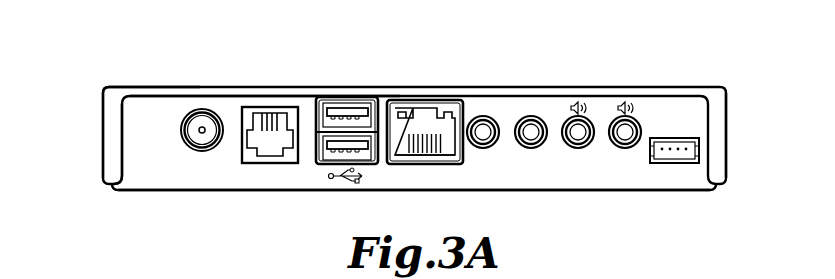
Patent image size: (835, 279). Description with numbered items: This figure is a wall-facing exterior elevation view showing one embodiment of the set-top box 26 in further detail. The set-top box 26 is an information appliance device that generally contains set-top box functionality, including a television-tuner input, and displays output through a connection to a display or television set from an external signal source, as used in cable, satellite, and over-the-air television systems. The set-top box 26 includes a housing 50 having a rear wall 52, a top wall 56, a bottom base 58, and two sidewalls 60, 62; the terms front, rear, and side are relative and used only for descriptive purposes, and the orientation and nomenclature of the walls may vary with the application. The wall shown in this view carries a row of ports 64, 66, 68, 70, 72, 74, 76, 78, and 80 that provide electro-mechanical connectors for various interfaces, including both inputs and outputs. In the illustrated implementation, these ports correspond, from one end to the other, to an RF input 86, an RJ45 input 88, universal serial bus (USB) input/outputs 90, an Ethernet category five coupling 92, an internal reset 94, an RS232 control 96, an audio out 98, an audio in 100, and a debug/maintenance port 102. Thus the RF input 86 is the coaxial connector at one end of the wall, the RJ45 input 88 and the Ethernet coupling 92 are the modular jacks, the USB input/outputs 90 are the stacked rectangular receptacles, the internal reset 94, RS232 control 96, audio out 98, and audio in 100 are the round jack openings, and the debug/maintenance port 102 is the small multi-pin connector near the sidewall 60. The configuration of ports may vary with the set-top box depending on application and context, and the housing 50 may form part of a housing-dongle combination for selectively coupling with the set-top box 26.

The set-top box 26 is at (106, 76).
The housing 50 is at (708, 78).
The rear wall 52 is at (141, 181).
The top wall 56 is at (172, 92).
The bottom base 58 is at (289, 192).
The sidewall 60 is at (727, 127).
The sidewall 62 is at (102, 103).
The port 64 is at (203, 109).
The port 66 is at (271, 113).
The port 68 is at (353, 102).
The port 70 is at (428, 107).
The port 72 is at (484, 116).
The port 74 is at (531, 116).
The port 76 is at (579, 116).
The port 78 is at (625, 116).
The port 80 is at (675, 163).
The RF input 86 is at (203, 151).
The RJ45 input 88 is at (249, 163).
The universal serial bus (USB) input/outputs 90 is at (338, 165).
The Ethernet category 5 (Cat 5) coupling 92 is at (426, 164).
The internal reset 94 is at (485, 149).
The RS232 control 96 is at (530, 149).
The audio out 98 is at (580, 149).
The audio in 100 is at (628, 149).
The debug/maintenance port 102 is at (700, 150).